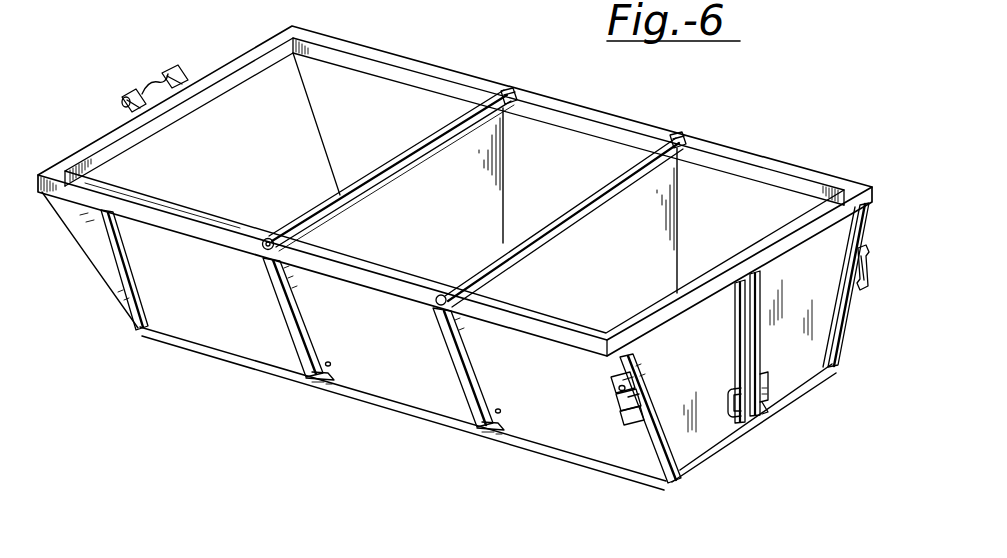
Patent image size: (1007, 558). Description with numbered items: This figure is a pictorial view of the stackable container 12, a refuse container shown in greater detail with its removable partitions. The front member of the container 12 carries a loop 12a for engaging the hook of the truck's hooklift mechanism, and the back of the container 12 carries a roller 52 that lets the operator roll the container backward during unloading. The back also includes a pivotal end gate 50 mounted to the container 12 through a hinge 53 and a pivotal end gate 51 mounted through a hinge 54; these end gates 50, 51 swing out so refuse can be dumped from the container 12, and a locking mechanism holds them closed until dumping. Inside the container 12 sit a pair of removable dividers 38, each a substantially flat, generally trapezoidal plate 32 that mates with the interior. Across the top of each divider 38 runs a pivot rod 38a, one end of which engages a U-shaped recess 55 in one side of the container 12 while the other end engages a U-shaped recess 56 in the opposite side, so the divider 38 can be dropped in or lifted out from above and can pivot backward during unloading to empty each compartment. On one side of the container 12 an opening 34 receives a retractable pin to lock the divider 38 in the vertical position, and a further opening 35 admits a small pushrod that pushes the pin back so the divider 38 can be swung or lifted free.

The stackable container 12 is at (603, 110).
The loop 12a is at (150, 76).
The plate 32 is at (475, 165).
The opening 34 is at (336, 380).
The opening 35 is at (507, 422).
The removable divider 38 is at (375, 162).
The pivot rod 38a is at (410, 162).
The pivotal end gate 50 is at (712, 420).
The pivotal end gate 51 is at (808, 362).
The roller 52 is at (767, 428).
The hinge 53 is at (615, 410).
The hinge 54 is at (862, 270).
The U-shaped recess 55 is at (266, 238).
The U-shaped recess 56 is at (508, 92).